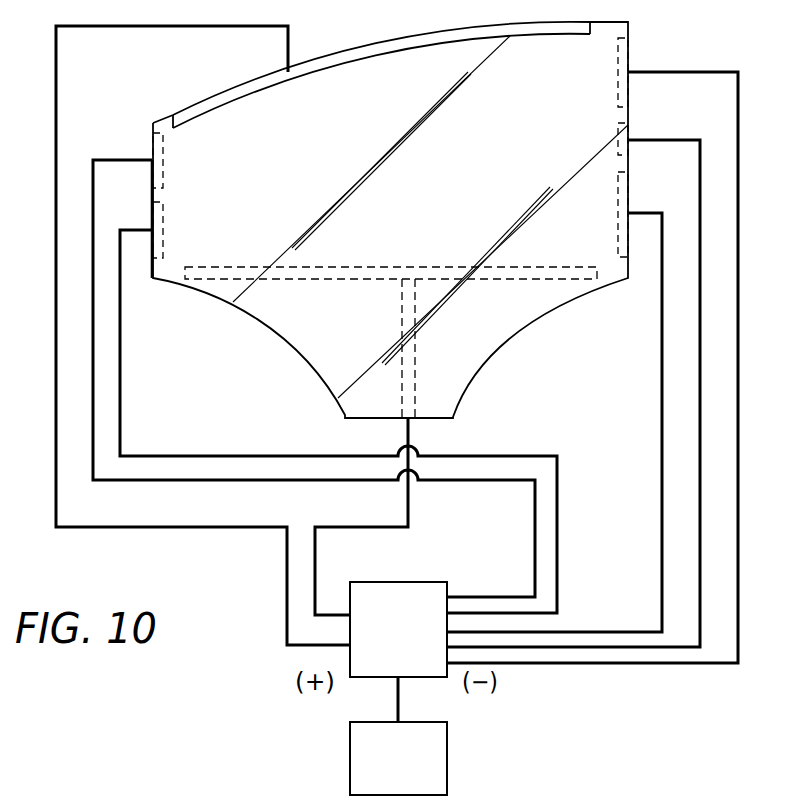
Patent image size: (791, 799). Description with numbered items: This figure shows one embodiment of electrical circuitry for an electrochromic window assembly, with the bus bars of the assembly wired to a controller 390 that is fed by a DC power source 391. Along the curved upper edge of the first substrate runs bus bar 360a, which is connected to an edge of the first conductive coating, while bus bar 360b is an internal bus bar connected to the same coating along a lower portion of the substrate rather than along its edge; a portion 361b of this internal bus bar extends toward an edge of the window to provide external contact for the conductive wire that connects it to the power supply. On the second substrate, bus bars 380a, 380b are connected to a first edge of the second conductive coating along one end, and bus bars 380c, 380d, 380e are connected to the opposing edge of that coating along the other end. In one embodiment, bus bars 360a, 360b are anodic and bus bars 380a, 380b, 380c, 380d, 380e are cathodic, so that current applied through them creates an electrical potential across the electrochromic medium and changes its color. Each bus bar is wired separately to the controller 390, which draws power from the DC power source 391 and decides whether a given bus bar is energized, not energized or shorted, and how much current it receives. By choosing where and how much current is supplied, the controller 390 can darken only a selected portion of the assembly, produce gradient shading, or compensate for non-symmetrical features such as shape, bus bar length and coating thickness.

The bus bar 360a is at (347, 50).
The bus bar 360b is at (510, 280).
The portion of internal bus bar 361b is at (415, 365).
The bus bar 380a is at (155, 153).
The bus bar 380b is at (152, 247).
The bus bar 380c is at (630, 54).
The bus bar 380d is at (622, 133).
The bus bar 380e is at (622, 193).
The controller 390 is at (400, 582).
The DC power source 391 is at (447, 758).